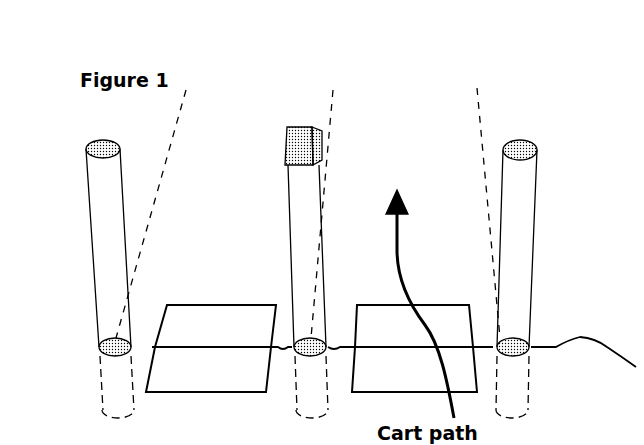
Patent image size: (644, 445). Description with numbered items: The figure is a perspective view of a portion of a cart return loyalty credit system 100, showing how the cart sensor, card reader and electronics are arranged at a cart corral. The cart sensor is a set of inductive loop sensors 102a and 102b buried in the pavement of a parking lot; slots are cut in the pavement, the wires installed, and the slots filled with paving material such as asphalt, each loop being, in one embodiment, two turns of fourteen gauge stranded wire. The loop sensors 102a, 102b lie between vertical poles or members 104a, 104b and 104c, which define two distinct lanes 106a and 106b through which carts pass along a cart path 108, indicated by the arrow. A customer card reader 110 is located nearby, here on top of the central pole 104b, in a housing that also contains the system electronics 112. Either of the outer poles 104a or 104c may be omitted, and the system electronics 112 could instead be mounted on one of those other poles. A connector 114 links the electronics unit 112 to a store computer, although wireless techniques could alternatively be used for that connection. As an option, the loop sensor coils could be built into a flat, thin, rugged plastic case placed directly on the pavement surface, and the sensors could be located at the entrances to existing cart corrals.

The cart return loyalty credit system 100 is at (457, 10).
The inductive loop sensor 102a is at (248, 393).
The inductive loop sensor 102b is at (180, 305).
The vertical pole 104a is at (90, 242).
The vertical pole 104b is at (290, 241).
The vertical pole 104c is at (535, 236).
The lane 106a is at (284, 107).
The lane 106b is at (440, 107).
The cart path 108 is at (399, 246).
The customer card reader 110 is at (310, 127).
The system electronics 112 is at (285, 152).
The connector 114 is at (584, 338).